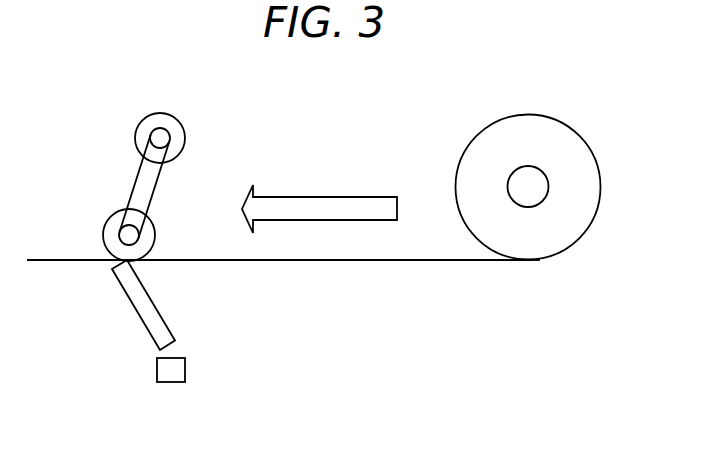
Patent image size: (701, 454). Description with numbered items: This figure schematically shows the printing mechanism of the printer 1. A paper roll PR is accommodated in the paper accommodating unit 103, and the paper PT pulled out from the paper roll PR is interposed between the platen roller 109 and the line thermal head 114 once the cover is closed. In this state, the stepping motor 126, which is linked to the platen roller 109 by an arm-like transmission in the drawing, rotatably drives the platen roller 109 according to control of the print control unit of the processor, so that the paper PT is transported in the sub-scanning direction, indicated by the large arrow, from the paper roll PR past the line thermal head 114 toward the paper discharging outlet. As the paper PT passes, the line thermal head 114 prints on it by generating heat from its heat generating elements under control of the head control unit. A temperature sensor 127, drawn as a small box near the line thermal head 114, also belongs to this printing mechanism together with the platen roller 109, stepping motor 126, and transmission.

The printer 1 is at (432, 124).
The paper roll PR is at (583, 138).
The paper PT is at (465, 261).
The paper accommodating unit 103 is at (532, 261).
The platen roller 109 is at (110, 220).
The stepping motor 126 is at (160, 113).
The line thermal head 114 is at (142, 328).
The temperature sensor 127 is at (157, 372).